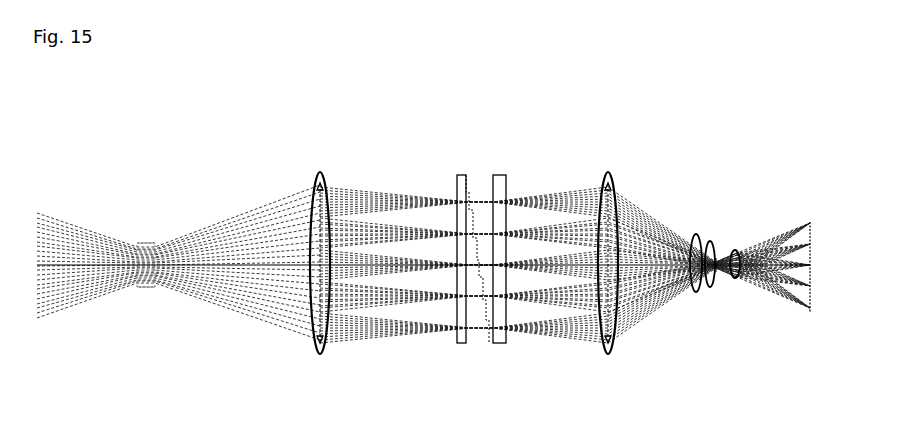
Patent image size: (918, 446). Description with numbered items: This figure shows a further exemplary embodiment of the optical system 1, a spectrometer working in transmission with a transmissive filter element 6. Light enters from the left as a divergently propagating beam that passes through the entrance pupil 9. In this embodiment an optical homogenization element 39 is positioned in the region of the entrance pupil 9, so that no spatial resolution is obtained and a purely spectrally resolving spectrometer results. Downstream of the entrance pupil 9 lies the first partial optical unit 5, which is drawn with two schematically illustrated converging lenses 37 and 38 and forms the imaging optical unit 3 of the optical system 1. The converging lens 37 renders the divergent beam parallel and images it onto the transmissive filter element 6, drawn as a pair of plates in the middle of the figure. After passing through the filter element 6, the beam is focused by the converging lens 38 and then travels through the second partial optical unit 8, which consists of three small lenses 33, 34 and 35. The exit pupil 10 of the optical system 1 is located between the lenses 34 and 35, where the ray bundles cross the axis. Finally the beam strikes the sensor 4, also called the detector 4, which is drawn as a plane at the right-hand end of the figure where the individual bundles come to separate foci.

The optical system 1 is at (590, 263).
The imaging optical unit 3 is at (312, 353).
The sensor 4 is at (808, 224).
The first partial optical unit 5 is at (600, 353).
The filter element 6 is at (472, 346).
The second partial optical unit 8 is at (719, 271).
The entrance pupil 9 is at (158, 245).
The exit pupil 10 is at (731, 254).
The lens 33 is at (696, 234).
The lens 34 is at (710, 288).
The lens 35 is at (739, 280).
The converging lens 37 is at (321, 350).
The converging lens 38 is at (609, 352).
The optical homogenization element 39 is at (147, 289).